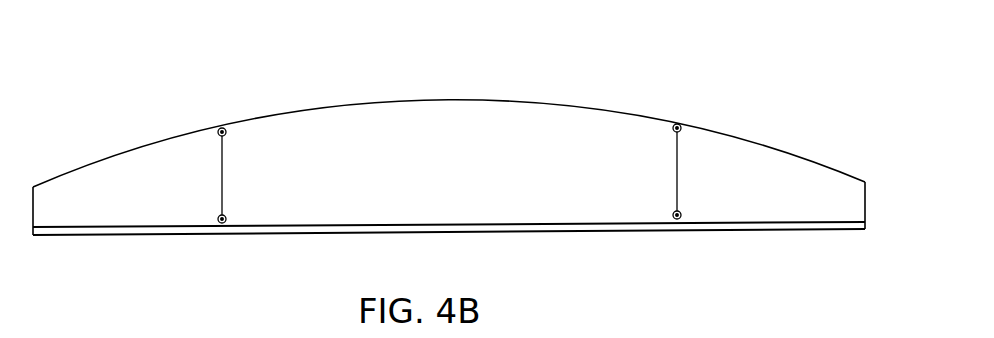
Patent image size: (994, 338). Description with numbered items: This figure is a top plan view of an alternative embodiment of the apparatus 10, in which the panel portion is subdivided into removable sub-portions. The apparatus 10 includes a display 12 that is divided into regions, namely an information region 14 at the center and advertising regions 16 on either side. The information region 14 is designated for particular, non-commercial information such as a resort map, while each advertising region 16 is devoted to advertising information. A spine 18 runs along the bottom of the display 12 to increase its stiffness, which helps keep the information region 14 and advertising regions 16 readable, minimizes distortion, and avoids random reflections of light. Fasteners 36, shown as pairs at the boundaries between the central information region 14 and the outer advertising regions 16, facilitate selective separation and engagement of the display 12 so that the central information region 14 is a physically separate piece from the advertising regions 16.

The apparatus 10 is at (598, 50).
The display 12 is at (497, 180).
The information region 14 is at (426, 116).
The advertising region 16 is at (146, 168).
The spine 18 is at (716, 227).
The fasteners 36 is at (228, 132).